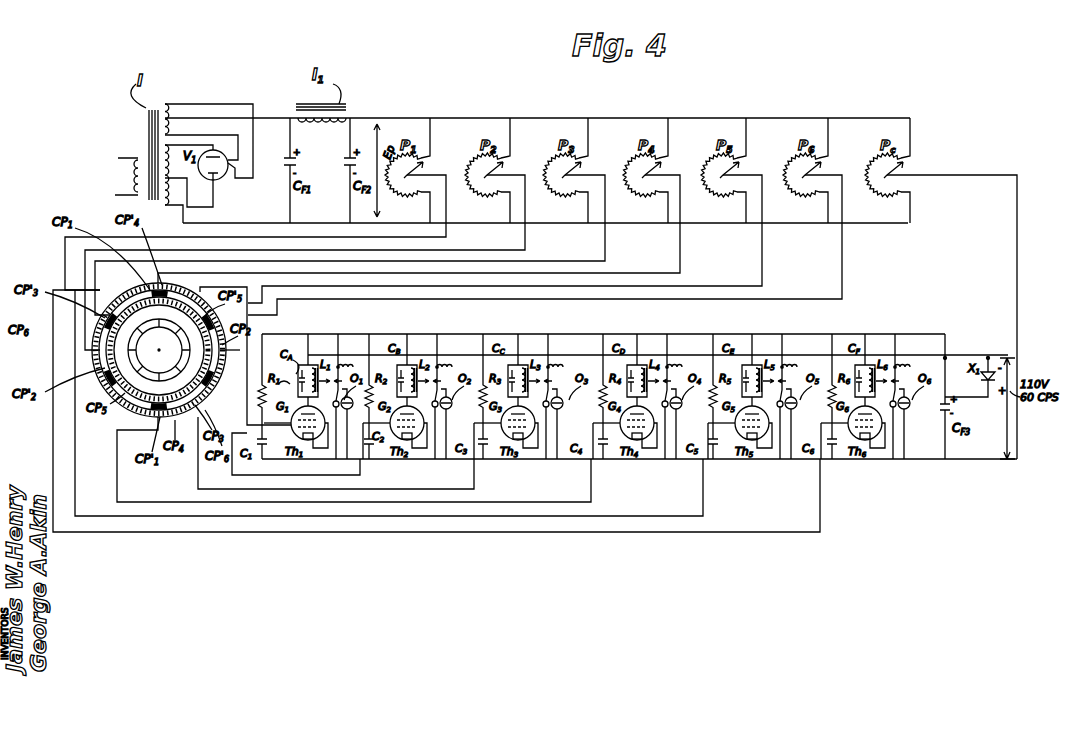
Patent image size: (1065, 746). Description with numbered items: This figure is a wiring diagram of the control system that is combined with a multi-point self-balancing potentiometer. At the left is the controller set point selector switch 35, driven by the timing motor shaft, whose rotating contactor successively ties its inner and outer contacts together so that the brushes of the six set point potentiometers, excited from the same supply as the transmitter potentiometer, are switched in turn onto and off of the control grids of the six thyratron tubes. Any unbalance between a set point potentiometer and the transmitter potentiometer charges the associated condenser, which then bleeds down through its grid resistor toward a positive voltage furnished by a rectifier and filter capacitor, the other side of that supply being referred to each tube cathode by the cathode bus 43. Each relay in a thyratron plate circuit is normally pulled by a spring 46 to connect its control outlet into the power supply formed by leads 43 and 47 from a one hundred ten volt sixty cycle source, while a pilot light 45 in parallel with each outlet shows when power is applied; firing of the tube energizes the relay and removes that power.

The controller set point selector switch 35 is at (187, 418).
The cathode bus 43 is at (523, 461).
The pilot light 45 is at (895, 462).
The spring 46 is at (898, 365).
The power supply lead 47 is at (528, 365).